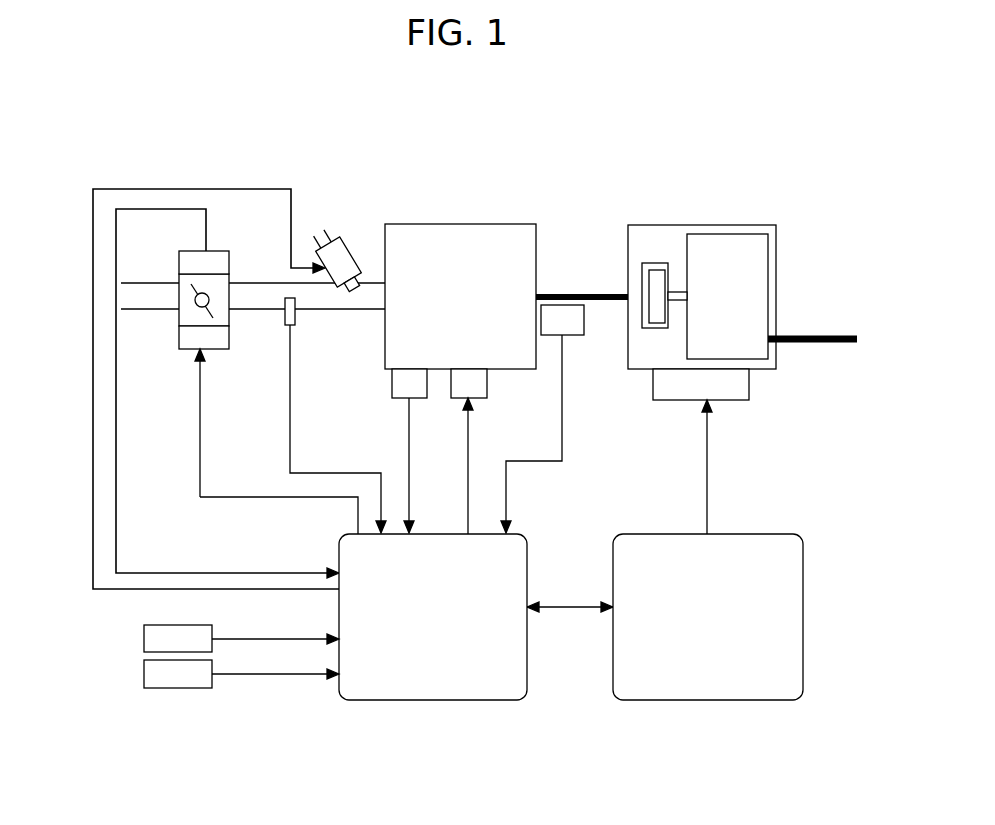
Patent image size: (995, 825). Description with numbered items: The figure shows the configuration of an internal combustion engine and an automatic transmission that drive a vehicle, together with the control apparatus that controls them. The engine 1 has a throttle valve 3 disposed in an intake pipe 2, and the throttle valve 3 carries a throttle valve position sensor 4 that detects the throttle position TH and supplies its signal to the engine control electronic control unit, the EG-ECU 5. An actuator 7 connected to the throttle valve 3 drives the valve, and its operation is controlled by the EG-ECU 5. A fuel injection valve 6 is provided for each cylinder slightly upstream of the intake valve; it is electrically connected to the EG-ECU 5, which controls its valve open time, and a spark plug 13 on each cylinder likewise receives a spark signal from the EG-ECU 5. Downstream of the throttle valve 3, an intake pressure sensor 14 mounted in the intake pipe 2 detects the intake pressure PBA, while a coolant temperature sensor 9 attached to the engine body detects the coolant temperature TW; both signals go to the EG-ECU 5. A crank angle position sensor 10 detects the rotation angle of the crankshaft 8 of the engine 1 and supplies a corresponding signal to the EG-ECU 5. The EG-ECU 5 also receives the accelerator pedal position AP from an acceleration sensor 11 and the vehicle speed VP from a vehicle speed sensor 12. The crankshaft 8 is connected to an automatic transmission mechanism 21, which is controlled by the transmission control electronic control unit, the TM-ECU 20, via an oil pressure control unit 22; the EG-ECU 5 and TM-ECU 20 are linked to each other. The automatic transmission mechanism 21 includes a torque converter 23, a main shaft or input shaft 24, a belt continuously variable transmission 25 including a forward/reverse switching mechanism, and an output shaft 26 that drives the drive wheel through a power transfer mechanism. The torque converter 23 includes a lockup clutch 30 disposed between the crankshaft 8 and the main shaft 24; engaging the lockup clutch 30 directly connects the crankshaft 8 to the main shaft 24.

The internal combustion engine 1 is at (421, 224).
The intake pipe 2 is at (327, 311).
The throttle valve 3 is at (190, 287).
The throttle valve position sensor 4 is at (212, 251).
The engine control electronic control unit (EG-ECU) 5 is at (444, 534).
The fuel injection valve 6 is at (352, 247).
The actuator 7 is at (223, 350).
The crankshaft 8 is at (565, 292).
The coolant temperature sensor 9 is at (400, 400).
The crank angle position sensor 10 is at (575, 337).
The acceleration sensor 11 is at (144, 630).
The vehicle speed sensor 12 is at (144, 666).
The spark plug 13 is at (478, 400).
The intake pressure sensor 14 is at (283, 324).
The transmission control electronic control unit (TM-ECU) 20 is at (783, 534).
The automatic transmission mechanism 21 is at (718, 225).
The oil pressure control unit 22 is at (735, 401).
The torque converter 23 is at (651, 248).
The main shaft (input shaft) 24 is at (683, 290).
The belt continuously variable transmission (CVT) 25 is at (757, 234).
The output shaft 26 is at (822, 336).
The lockup clutch 30 is at (642, 267).